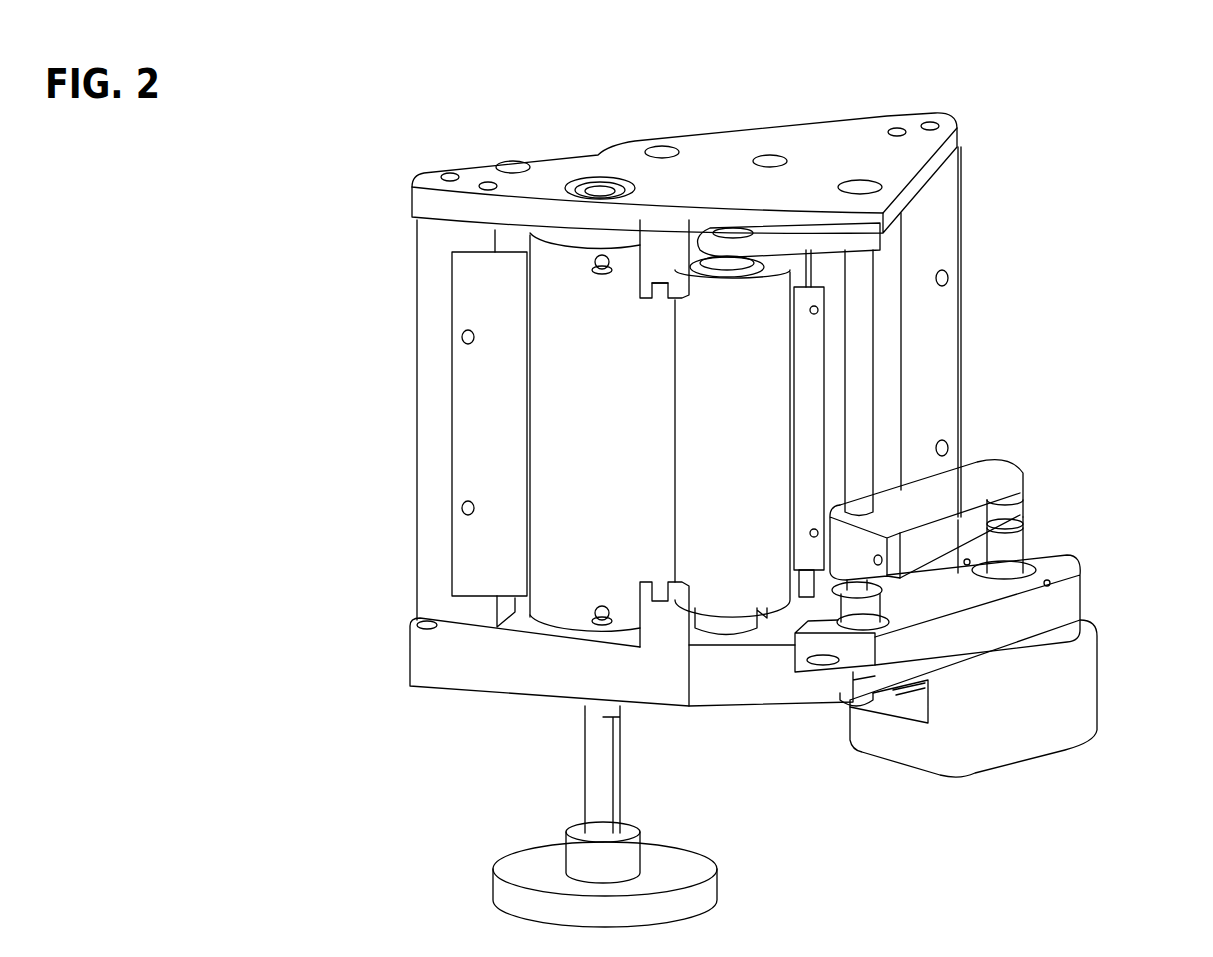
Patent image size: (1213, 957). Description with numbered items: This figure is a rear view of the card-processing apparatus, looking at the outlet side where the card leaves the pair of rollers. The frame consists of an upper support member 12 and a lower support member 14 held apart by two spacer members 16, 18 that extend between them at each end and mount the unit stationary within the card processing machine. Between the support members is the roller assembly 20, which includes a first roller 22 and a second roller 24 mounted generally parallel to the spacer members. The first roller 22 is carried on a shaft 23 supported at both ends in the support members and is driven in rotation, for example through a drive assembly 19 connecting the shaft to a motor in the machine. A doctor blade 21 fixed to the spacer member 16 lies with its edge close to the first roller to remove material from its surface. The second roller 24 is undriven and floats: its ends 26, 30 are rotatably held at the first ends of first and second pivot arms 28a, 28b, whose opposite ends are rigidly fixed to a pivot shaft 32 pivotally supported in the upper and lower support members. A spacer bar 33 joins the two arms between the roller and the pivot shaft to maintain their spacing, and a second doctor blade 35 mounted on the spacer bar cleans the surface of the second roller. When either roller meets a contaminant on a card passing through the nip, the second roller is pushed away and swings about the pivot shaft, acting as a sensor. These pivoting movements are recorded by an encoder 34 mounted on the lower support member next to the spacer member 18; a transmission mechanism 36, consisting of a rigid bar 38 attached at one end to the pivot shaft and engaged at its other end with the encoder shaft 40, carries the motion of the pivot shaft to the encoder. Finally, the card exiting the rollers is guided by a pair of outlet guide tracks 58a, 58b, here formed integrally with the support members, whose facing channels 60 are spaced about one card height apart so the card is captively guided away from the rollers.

The upper support member 12 is at (686, 180).
The lower support member 14 is at (752, 680).
The spacer member 16 is at (430, 262).
The spacer member 18 is at (918, 238).
The drive assembly 19 is at (554, 832).
The roller assembly 20 is at (595, 553).
The doctor blade 21 is at (495, 403).
The first roller 22 is at (553, 263).
The shaft 23 is at (600, 188).
The second roller 24 is at (718, 588).
The end of second roller 26 is at (698, 262).
The first pivot arm 28a is at (820, 240).
The second pivot arm 28b is at (792, 622).
The end of second roller 30 is at (768, 608).
The pivot shaft 32 is at (860, 373).
The spacer bar 33 is at (816, 271).
The encoder 34 is at (1063, 717).
The doctor blade 35 is at (798, 288).
The transmission mechanism 36 is at (982, 446).
The bar 38 is at (987, 493).
The encoder shaft 40 is at (1013, 557).
The outlet guide track 58a is at (652, 278).
The outlet guide track 58b is at (655, 580).
The channel 60 is at (663, 292).